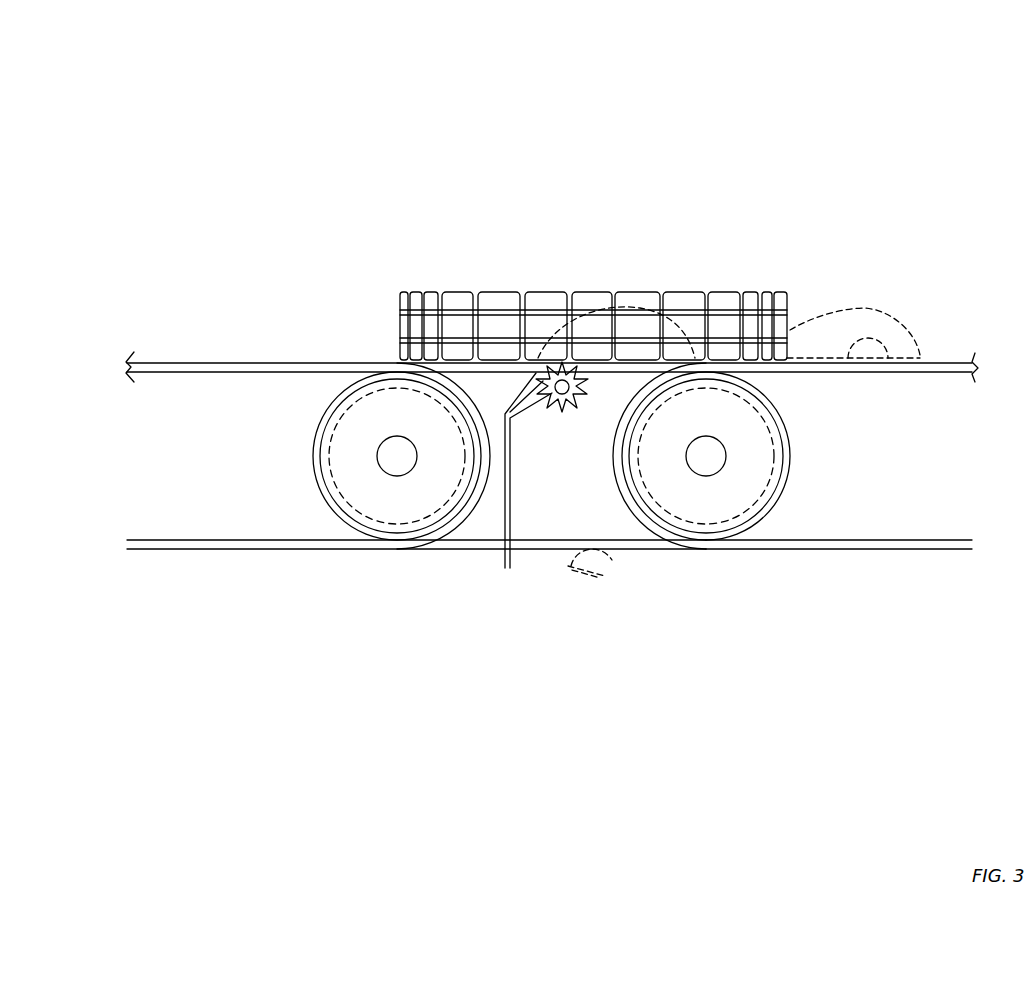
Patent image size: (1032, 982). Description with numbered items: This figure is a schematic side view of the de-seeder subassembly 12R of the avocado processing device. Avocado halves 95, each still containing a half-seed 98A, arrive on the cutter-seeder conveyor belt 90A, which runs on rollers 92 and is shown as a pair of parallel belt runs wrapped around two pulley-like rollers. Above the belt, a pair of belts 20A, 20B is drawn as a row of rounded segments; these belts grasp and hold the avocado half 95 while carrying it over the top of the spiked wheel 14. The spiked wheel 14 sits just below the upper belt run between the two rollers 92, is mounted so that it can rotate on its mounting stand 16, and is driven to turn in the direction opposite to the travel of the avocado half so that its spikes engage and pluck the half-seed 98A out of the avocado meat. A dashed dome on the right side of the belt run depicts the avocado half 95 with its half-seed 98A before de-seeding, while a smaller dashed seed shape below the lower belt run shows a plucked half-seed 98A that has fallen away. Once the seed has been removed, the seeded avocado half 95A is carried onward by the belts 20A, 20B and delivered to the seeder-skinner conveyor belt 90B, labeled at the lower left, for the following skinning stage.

The de-seeder subassembly 12R is at (327, 175).
The seeder-skinner conveyor belt 90B is at (247, 551).
The cutter-seeder conveyor belt 90A is at (845, 550).
The rollers 92 is at (312, 455).
The belt 20A is at (665, 270).
The belt 20B is at (595, 222).
The seeded avocado half 95A is at (627, 283).
The avocado half 95 is at (848, 310).
The half-seed 98A is at (895, 318).
The spiked wheel 14 is at (565, 410).
The mounting stand 16 is at (505, 556).